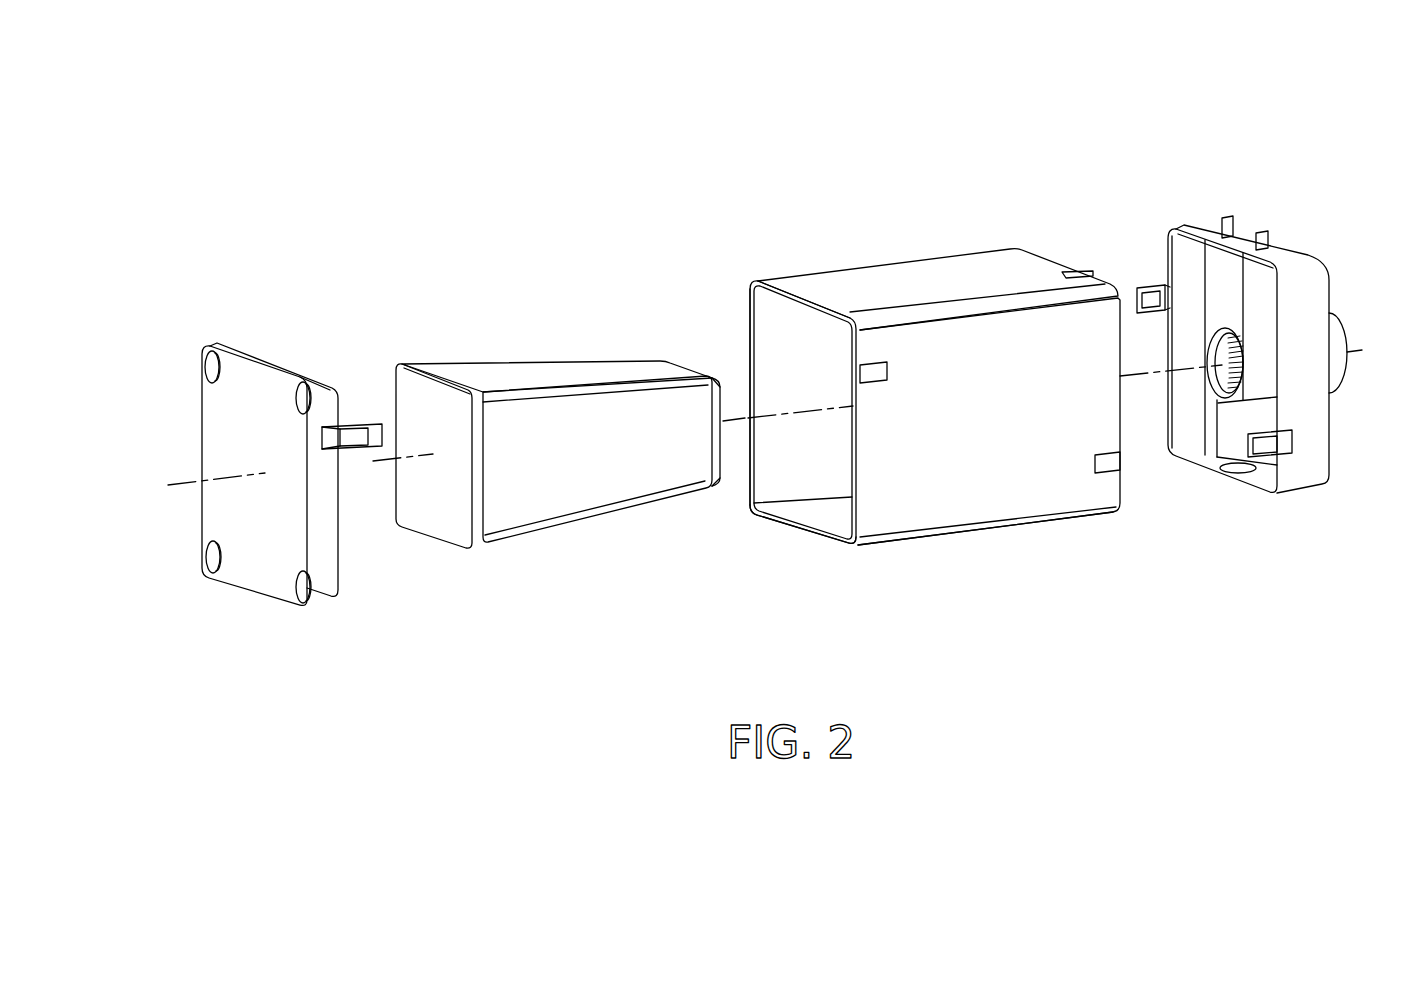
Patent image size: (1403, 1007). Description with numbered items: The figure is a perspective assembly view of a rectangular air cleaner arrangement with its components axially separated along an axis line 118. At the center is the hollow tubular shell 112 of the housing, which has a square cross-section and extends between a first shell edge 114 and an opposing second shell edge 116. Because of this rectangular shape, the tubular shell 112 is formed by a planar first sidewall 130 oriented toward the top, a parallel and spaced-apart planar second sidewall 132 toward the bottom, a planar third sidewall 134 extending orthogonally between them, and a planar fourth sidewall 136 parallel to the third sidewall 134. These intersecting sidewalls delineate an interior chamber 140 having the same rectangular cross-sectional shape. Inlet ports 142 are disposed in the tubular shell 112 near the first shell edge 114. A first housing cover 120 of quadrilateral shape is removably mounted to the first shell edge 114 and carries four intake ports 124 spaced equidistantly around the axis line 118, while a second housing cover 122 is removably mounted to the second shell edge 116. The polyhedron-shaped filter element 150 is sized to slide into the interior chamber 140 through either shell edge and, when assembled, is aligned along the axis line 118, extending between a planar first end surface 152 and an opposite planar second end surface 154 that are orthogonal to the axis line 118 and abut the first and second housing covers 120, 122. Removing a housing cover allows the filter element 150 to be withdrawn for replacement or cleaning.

The tubular shell 112 is at (861, 399).
The first shell edge 114 is at (773, 280).
The second shell edge 116 is at (1057, 260).
The axis line 118 is at (190, 483).
The first housing cover 120 is at (253, 570).
The second housing cover 122 is at (1198, 225).
The intake ports 124 is at (203, 362).
The first sidewall 130 is at (992, 267).
The second sidewall 132 is at (787, 527).
The third sidewall 134 is at (927, 537).
The fourth sidewall 136 is at (745, 382).
The interior chamber 140 is at (743, 342).
The inlet ports 142 is at (732, 507).
The filter element 150 is at (562, 419).
The first end surface 152 is at (383, 400).
The second end surface 154 is at (692, 365).